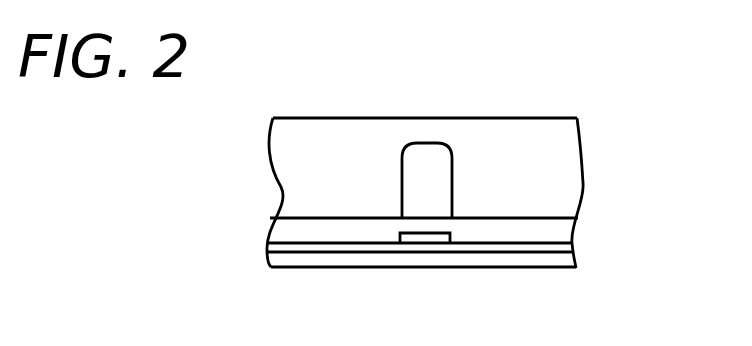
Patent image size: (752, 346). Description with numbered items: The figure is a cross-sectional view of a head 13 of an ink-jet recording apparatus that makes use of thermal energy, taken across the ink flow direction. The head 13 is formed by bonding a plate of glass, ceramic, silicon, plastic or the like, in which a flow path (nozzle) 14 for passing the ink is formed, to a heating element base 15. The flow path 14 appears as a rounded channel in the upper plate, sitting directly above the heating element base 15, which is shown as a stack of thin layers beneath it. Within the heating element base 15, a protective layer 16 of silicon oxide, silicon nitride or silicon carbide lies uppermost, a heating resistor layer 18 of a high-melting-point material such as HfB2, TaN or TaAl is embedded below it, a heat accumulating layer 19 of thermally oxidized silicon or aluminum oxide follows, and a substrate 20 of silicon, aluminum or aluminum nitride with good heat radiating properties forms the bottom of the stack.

The head 13 is at (326, 118).
The flow path (nozzle) 14 is at (426, 143).
The heating element base 15 is at (582, 218).
The protective layer 16 is at (352, 225).
The heating resistor layer 18 is at (428, 240).
The heat accumulating layer 19 is at (473, 248).
The substrate 20 is at (528, 260).